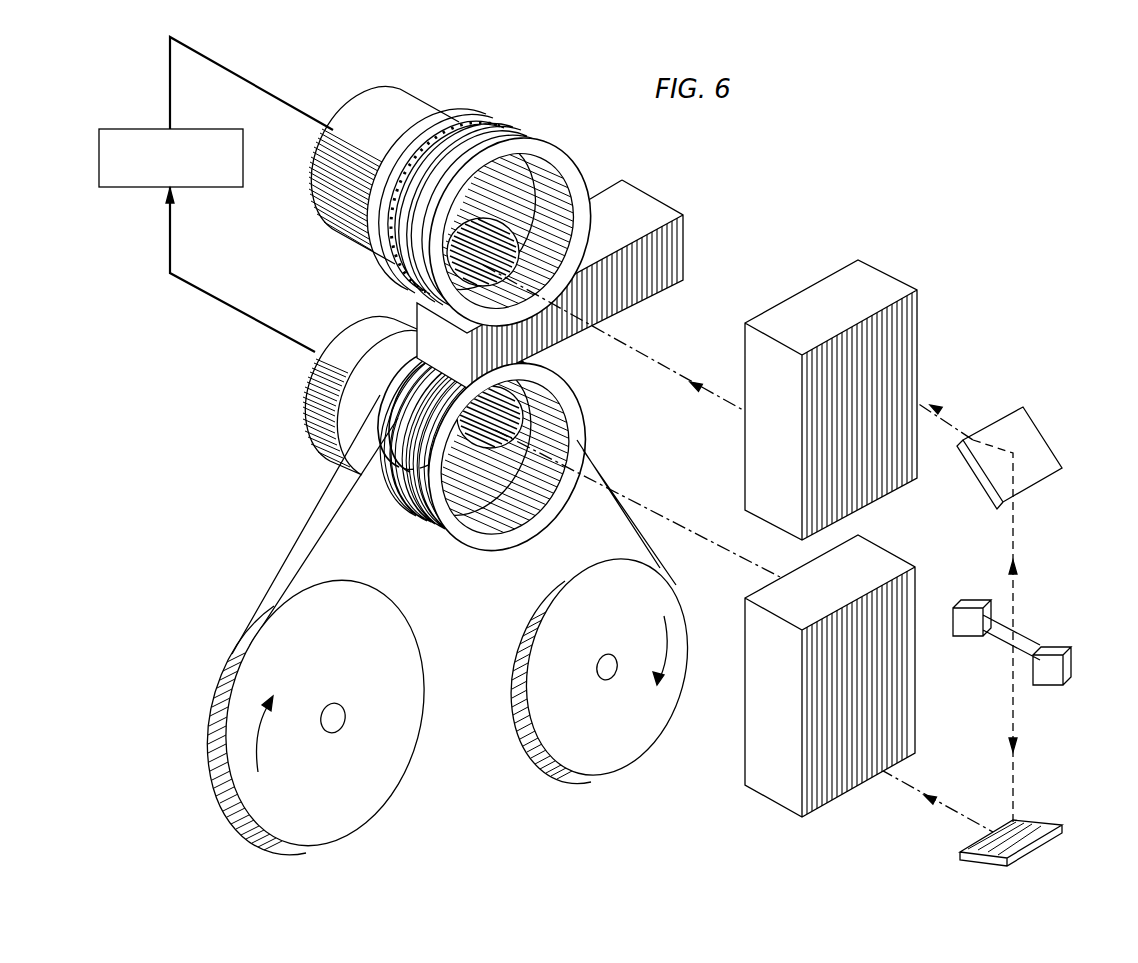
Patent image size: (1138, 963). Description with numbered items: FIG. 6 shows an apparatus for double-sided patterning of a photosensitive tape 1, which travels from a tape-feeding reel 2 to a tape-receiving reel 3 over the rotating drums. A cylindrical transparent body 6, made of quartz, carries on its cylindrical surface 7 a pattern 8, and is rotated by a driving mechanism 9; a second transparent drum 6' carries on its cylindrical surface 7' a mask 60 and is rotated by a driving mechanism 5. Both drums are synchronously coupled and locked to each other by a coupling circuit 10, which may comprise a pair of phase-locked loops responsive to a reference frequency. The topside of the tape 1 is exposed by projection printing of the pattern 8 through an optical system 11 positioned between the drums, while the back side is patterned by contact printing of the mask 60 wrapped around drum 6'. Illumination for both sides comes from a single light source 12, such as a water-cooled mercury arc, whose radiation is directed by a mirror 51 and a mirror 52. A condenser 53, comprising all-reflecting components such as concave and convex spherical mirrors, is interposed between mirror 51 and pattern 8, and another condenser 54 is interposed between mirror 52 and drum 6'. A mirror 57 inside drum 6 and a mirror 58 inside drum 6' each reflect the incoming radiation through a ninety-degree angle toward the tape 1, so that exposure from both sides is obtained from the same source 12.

The photosensitive tape 1 is at (312, 551).
The tape-feeding reel 2 is at (372, 785).
The tape-receiving reel 3 is at (612, 743).
The driving mechanism 5 is at (345, 328).
The cylindrical transparent body 6 is at (502, 232).
The drum 6' is at (499, 456).
The cylindrical surface 7 is at (464, 207).
The cylindrical surface 7' is at (459, 467).
The pattern 8 is at (468, 135).
The driving mechanism 9 is at (325, 194).
The coupling circuit 10 is at (207, 187).
The optical system 11 is at (683, 262).
The light source 12 is at (1058, 650).
The mirror 51 is at (1040, 442).
The mirror 52 is at (1037, 828).
The condenser 53 is at (827, 287).
The condenser 54 is at (767, 787).
The mirror 57 is at (512, 243).
The mirror 58 is at (486, 450).
The mask 60 is at (390, 512).